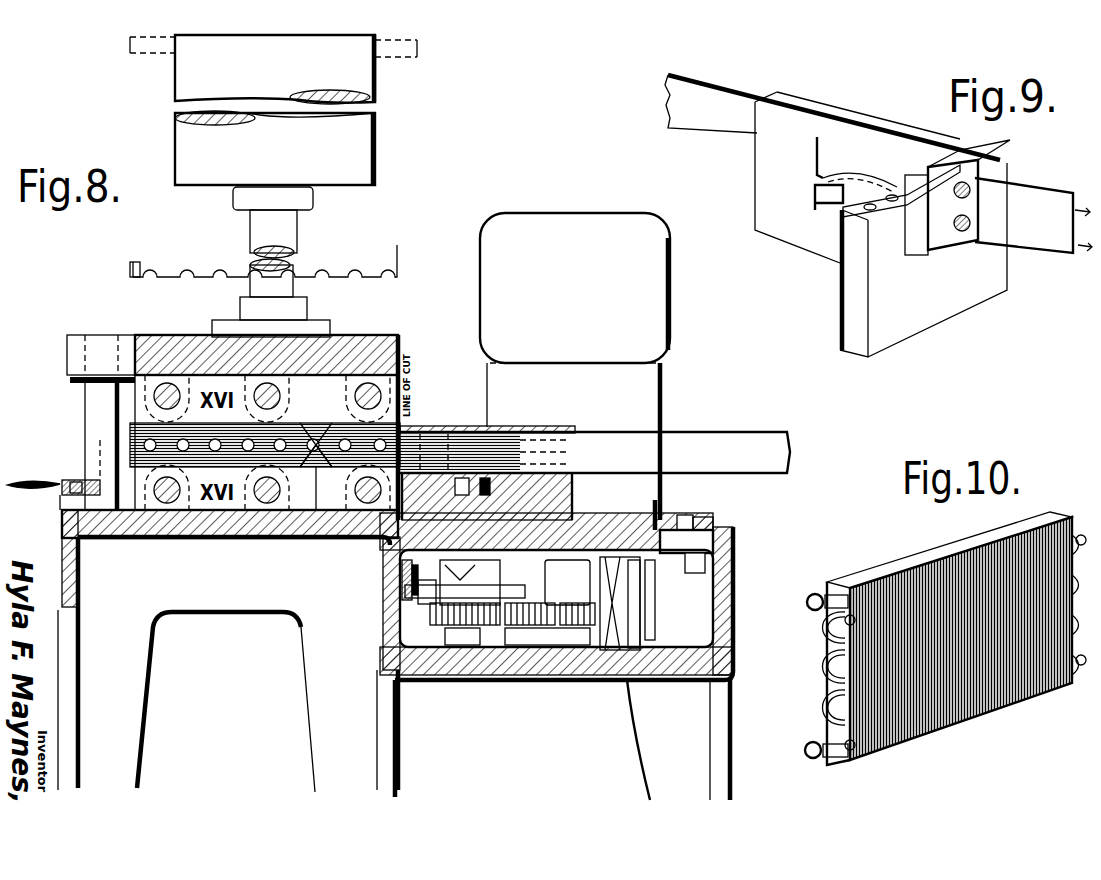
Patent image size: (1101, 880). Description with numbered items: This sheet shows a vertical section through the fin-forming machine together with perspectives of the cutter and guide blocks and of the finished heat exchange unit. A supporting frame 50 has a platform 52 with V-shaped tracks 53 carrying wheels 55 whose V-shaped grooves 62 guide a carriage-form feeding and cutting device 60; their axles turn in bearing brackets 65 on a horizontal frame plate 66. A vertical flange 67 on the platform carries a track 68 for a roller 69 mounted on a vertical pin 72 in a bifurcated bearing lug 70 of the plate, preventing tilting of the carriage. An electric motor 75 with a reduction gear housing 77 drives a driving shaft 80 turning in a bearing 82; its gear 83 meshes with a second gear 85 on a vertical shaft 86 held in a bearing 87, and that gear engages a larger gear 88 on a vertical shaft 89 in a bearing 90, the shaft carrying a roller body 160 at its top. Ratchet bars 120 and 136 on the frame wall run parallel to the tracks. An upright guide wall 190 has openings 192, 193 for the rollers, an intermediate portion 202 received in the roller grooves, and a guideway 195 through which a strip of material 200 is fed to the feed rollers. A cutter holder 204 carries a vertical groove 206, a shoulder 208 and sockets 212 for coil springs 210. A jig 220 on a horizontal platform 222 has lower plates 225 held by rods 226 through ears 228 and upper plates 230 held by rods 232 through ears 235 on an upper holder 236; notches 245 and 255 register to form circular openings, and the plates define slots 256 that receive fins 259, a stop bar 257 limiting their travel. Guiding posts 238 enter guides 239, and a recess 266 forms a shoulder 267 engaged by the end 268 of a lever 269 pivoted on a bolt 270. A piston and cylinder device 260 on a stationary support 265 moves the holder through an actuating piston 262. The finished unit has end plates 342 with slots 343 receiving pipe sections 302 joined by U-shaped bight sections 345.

In FIG. 8, the stationary support 265 is at (397, 60).
In FIG. 8, the piston and cylinder device 260 is at (375, 140).
In FIG. 8, the actuating piston 262 is at (270, 265).
In FIG. 8, the ears 235 is at (135, 385).
In FIG. 8, the jig 220 is at (148, 360).
In FIG. 8, the bolts or rods 232 is at (168, 380).
In FIG. 8, the upper plates 230 is at (333, 387).
In FIG. 8, the upper horizontal plate holder 236 is at (385, 352).
In FIG. 8, the guiding posts 238 is at (85, 402).
In FIG. 8, the stop strip or bar 257 is at (130, 430).
In FIG. 8, the shoulder 267 is at (85, 490).
In FIG. 8, the lever 269 is at (32, 468).
In FIG. 8, the end of lever 268 is at (95, 490).
In FIG. 8, the guides 239 is at (78, 533).
In FIG. 8, the bolt 270 is at (101, 459).
In FIG. 8, the semicircular notches 255 is at (318, 438).
In FIG. 8, the semicircular notches 245 is at (318, 462).
In FIG. 8, the slots 256 is at (403, 428).
In FIG. 8, the coil springs 210 is at (420, 430).
In FIG. 8, the roller body 160 is at (448, 430).
In FIG. 8, the guideway 195 is at (540, 435).
In FIG. 8, the electric motor 75 is at (650, 300).
In FIG. 8, the reduction gear housing 77 is at (645, 406).
In FIG. 8, the strip of material 200 is at (745, 437).
In FIG. 9, the strip of material 200 is at (1037, 232).
In FIG. 8, the upright guide wall 190 is at (572, 495).
In FIG. 9, the upright guide wall 190 is at (760, 125).
In FIG. 8, the frame plate 66 is at (628, 540).
In FIG. 8, the traveling strip feeding and cutting device 60 is at (658, 495).
In FIG. 8, the vertical pin 72 is at (690, 518).
In FIG. 8, the bifurcated bearing lug 70 is at (705, 522).
In FIG. 8, the track 68 is at (718, 530).
In FIG. 8, the roller 69 is at (700, 548).
In FIG. 8, the vertical flange 67 is at (720, 577).
In FIG. 8, the supporting frame 50 is at (740, 666).
In FIG. 8, the bearing 82 is at (640, 590).
In FIG. 8, the bearing lugs or brackets 65 is at (650, 613).
In FIG. 8, the wheels or rollers 55 is at (630, 638).
In FIG. 8, the bearing 90 is at (500, 575).
In FIG. 8, the bearing 87 is at (610, 572).
In FIG. 8, the rails or tracks 53 is at (462, 645).
In FIG. 8, the V-shaped grooves 62 is at (470, 648).
In FIG. 8, the vertical shaft 86 is at (515, 645).
In FIG. 8, the second gear 85 is at (535, 645).
In FIG. 8, the gear 83 is at (560, 645).
In FIG. 8, the driving shaft 80 is at (582, 648).
In FIG. 8, the platform 52 is at (672, 676).
In FIG. 8, the recess 266 is at (95, 497).
In FIG. 8, the ears 228 is at (190, 493).
In FIG. 8, the horizontal platform 222 is at (212, 533).
In FIG. 8, the bolts or rods 226 is at (267, 500).
In FIG. 8, the lower plates 225 is at (316, 535).
In FIG. 8, the ratchet bar 136 is at (400, 566).
In FIG. 8, the ratchet bar 120 is at (405, 588).
In FIG. 8, the larger gear 88 is at (405, 612).
In FIG. 8, the vertical shaft 89 is at (410, 632).
In FIG. 9, the opening 193 is at (862, 152).
In FIG. 9, the opening 192 is at (817, 197).
In FIG. 9, the intermediate portion of wall 202 is at (892, 198).
In FIG. 9, the sockets 212 is at (968, 223).
In FIG. 9, the vertical groove 206 is at (915, 255).
In FIG. 9, the shoulder 208 is at (953, 250).
In FIG. 9, the cutter holder 204 is at (895, 330).
In FIG. 10, the end plates 342 is at (843, 593).
In FIG. 10, the fins 259 is at (925, 553).
In FIG. 10, the slots 343 is at (822, 655).
In FIG. 10, the U-shaped bight sections 345 is at (822, 700).
In FIG. 10, the pipe sections 302 is at (835, 757).